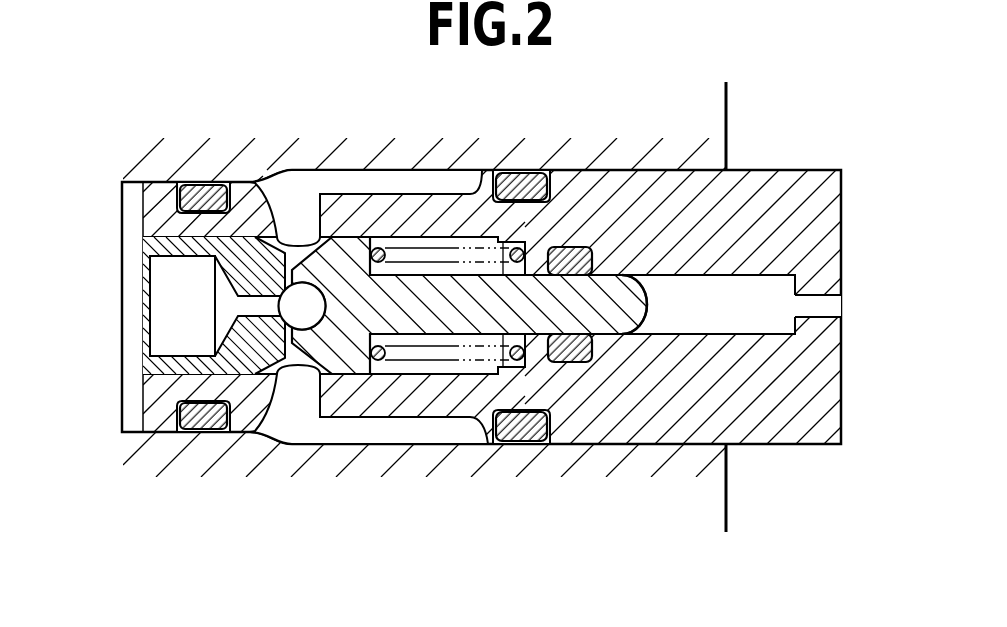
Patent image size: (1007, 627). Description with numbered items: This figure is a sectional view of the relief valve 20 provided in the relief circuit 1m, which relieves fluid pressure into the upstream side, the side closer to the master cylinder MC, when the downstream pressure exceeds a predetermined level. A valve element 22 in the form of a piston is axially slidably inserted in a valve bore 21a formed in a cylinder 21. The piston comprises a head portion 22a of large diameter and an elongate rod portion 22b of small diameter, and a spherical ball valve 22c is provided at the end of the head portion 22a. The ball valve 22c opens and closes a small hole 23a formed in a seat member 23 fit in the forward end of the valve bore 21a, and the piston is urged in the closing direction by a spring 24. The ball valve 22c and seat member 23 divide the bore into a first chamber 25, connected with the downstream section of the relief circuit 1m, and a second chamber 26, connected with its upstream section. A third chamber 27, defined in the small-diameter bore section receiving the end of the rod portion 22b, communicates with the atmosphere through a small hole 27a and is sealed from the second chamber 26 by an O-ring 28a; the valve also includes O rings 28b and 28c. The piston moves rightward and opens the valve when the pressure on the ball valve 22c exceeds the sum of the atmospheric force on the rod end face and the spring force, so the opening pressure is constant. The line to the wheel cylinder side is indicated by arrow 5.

The relief valve 20 is at (768, 168).
The cylinder 21 is at (827, 215).
The valve bore 21a is at (400, 370).
The valve element 22 is at (483, 308).
The head portion 22a is at (347, 357).
The rod portion 22b is at (617, 322).
The ball valve 22c is at (292, 314).
The seat member 23 is at (172, 384).
The small hole 23a is at (262, 283).
The spring 24 is at (381, 247).
The first chamber 25 is at (160, 334).
The second chamber 26 is at (441, 240).
The third chamber 27 is at (750, 317).
The small hole 27a is at (827, 307).
The O-ring 28a is at (577, 355).
The O ring 28b is at (200, 198).
The O ring 28c is at (522, 178).
The wheel cylinder line 5 is at (178, 306).
The relief circuit 1m is at (298, 138).
The master cylinder MC is at (297, 226).